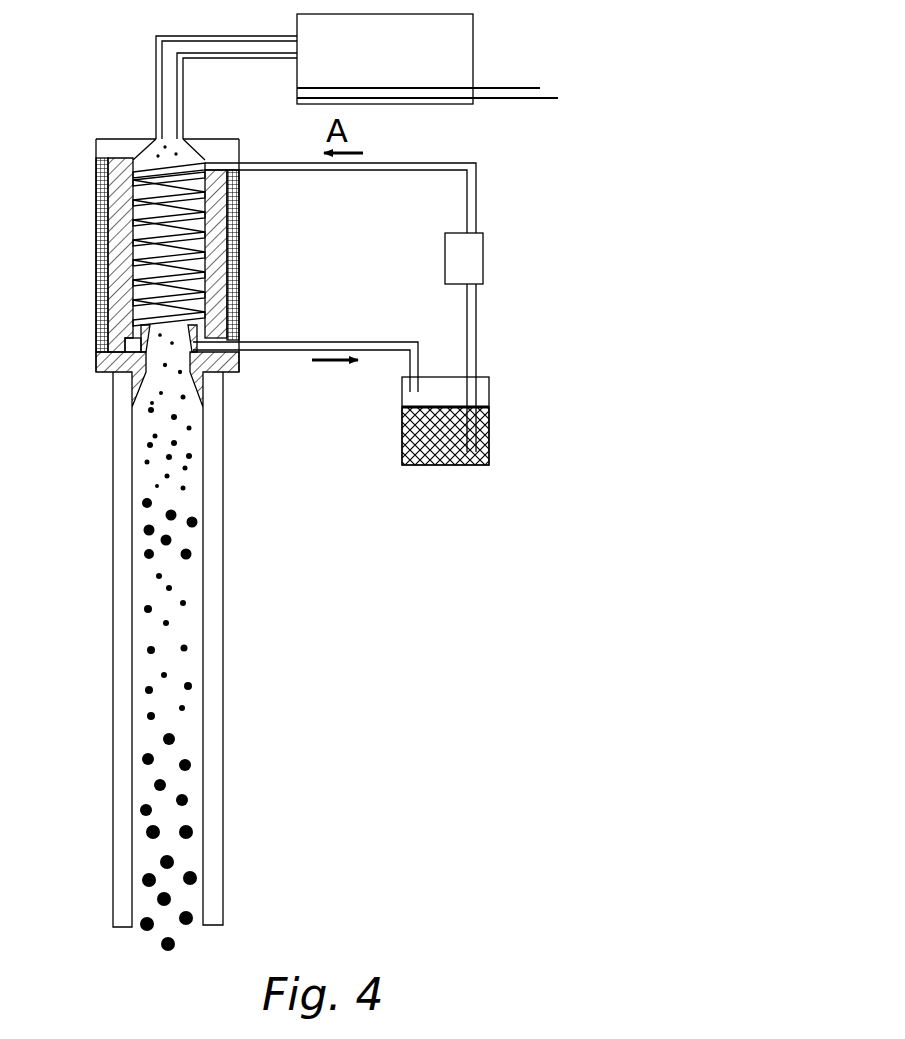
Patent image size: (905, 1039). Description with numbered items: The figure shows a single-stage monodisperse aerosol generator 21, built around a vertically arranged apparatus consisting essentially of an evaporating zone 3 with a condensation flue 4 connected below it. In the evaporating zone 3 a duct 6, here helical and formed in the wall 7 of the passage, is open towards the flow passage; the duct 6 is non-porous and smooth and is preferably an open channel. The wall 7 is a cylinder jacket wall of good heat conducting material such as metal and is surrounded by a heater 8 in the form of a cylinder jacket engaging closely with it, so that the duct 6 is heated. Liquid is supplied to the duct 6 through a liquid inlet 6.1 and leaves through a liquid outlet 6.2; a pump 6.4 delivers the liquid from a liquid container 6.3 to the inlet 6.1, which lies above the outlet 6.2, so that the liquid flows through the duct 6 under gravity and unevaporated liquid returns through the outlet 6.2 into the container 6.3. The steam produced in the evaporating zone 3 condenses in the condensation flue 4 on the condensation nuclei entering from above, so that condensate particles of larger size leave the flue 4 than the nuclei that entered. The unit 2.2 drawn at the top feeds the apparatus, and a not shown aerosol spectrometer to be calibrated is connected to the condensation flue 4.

The monodisperse aerosol generator 21 is at (130, 71).
The pump unit 2.2 is at (460, 62).
The evaporating zone 3 is at (88, 250).
The condensation flue 4 is at (214, 666).
The duct 6 is at (172, 209).
The wall 7 is at (237, 278).
The heater 8 is at (237, 313).
The liquid inlet 6.1 is at (268, 165).
The liquid outlet 6.2 is at (255, 348).
The liquid container 6.3 is at (437, 452).
The pump 6.4 is at (483, 258).